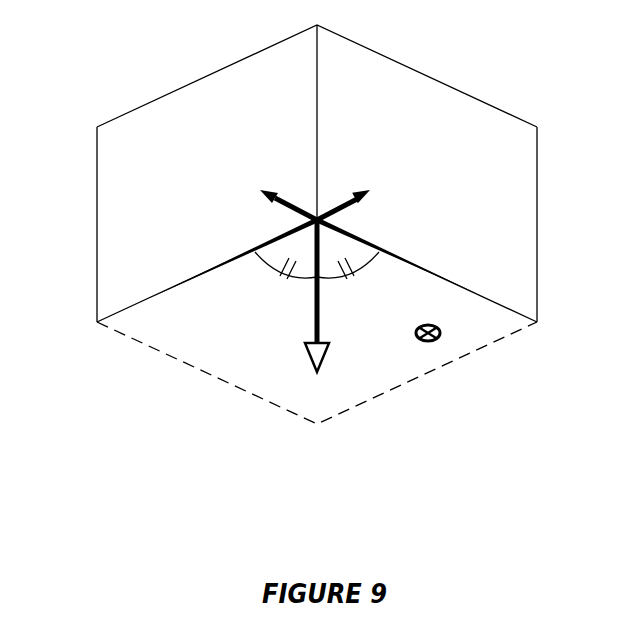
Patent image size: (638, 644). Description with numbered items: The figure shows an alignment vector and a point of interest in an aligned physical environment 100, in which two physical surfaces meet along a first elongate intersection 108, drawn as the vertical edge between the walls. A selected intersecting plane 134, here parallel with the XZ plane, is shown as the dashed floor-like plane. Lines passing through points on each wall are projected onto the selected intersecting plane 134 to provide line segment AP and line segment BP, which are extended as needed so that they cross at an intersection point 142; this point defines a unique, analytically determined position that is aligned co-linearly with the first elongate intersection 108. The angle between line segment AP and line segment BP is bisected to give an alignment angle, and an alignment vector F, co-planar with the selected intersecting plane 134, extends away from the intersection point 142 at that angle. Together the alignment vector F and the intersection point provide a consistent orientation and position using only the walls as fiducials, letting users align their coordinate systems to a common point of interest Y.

The physical environment 100 is at (166, 70).
The first elongate intersection 108 is at (317, 165).
The selected intersecting plane 134 is at (228, 385).
The intersection point 142 is at (324, 222).
The line segment AP is at (210, 268).
The line segment BP is at (408, 261).
The alignment vector F is at (319, 320).
The point of interest Y is at (440, 341).